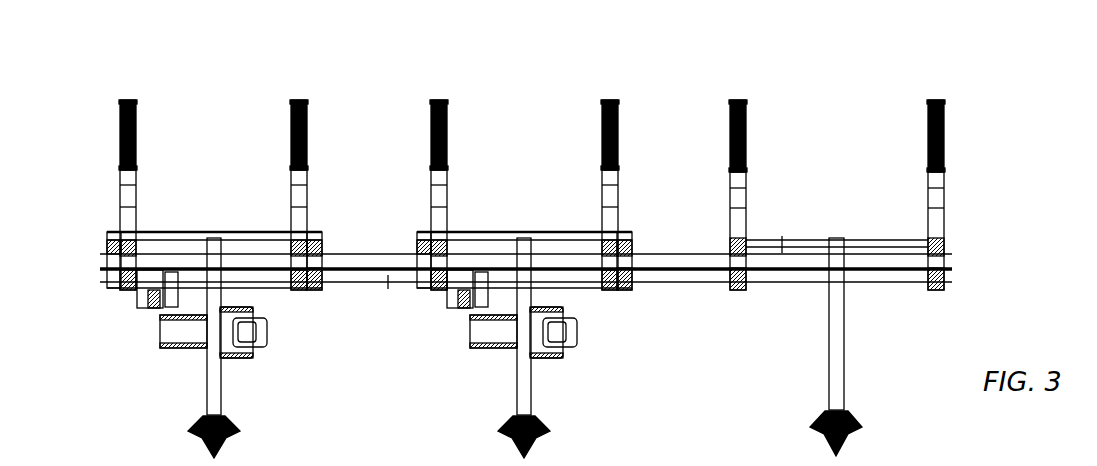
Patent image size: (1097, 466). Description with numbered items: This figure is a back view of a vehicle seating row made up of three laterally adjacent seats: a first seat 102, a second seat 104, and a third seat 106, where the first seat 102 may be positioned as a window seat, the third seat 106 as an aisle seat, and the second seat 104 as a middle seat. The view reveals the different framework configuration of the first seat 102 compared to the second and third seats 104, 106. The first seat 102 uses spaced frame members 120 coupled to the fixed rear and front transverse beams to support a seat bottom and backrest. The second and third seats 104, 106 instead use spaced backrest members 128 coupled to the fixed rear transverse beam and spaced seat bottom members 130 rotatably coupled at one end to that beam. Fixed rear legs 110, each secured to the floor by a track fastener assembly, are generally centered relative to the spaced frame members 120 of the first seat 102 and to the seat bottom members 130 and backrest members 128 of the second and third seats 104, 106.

The first seat 102 is at (834, 90).
The second seat 104 is at (527, 90).
The third seat 106 is at (211, 90).
The fixed rear leg 110 is at (215, 395).
The spaced frame members 120 is at (737, 100).
The spaced backrest members 128 is at (128, 100).
The spaced seat bottom members 130 is at (311, 240).